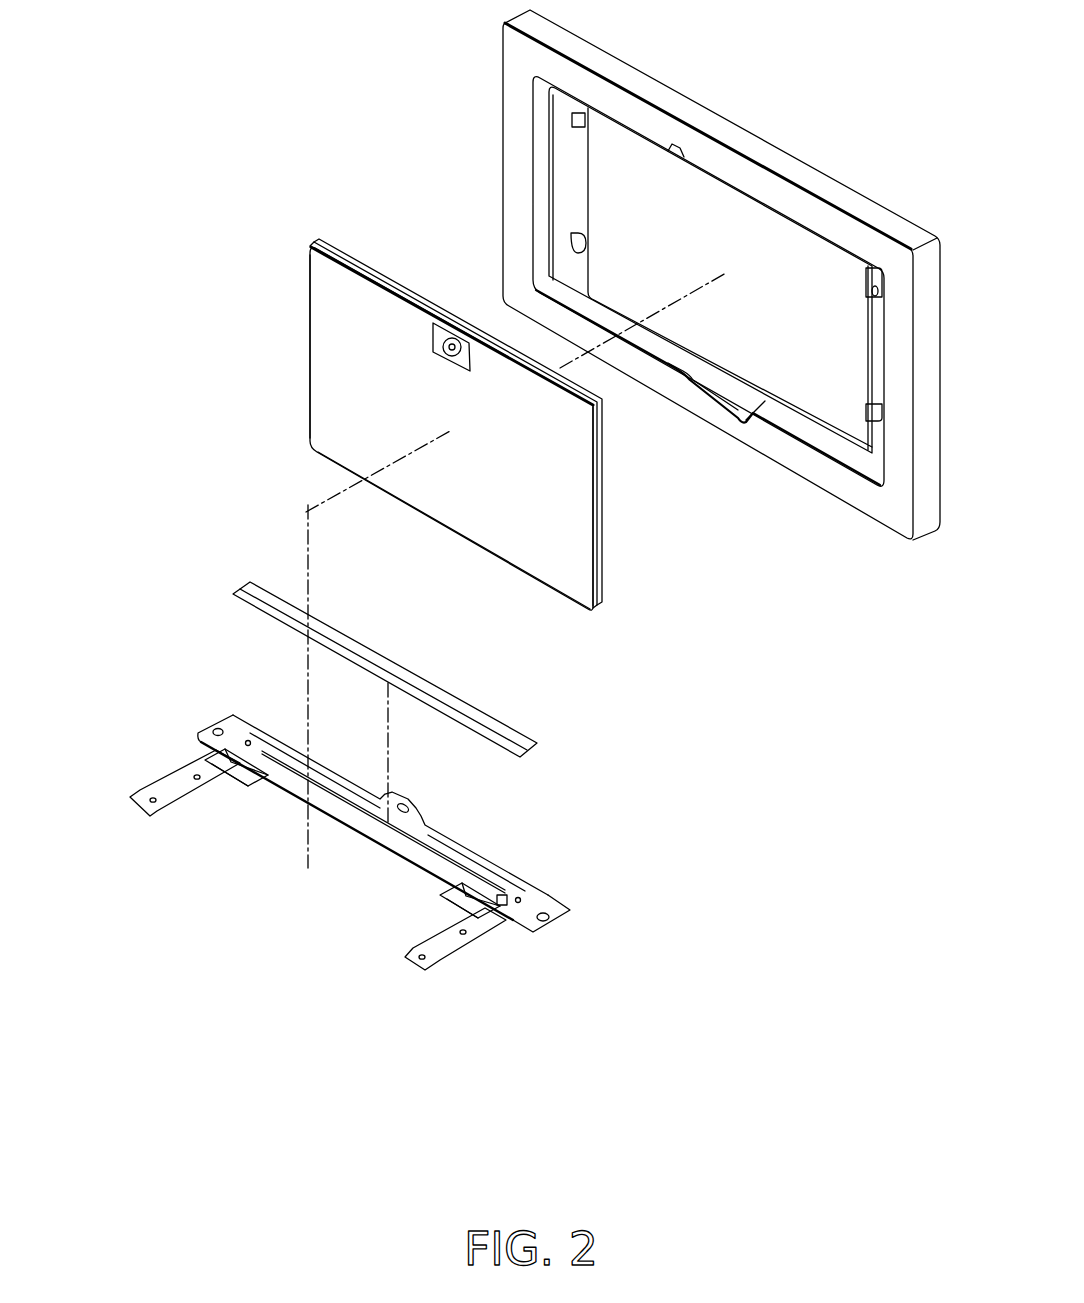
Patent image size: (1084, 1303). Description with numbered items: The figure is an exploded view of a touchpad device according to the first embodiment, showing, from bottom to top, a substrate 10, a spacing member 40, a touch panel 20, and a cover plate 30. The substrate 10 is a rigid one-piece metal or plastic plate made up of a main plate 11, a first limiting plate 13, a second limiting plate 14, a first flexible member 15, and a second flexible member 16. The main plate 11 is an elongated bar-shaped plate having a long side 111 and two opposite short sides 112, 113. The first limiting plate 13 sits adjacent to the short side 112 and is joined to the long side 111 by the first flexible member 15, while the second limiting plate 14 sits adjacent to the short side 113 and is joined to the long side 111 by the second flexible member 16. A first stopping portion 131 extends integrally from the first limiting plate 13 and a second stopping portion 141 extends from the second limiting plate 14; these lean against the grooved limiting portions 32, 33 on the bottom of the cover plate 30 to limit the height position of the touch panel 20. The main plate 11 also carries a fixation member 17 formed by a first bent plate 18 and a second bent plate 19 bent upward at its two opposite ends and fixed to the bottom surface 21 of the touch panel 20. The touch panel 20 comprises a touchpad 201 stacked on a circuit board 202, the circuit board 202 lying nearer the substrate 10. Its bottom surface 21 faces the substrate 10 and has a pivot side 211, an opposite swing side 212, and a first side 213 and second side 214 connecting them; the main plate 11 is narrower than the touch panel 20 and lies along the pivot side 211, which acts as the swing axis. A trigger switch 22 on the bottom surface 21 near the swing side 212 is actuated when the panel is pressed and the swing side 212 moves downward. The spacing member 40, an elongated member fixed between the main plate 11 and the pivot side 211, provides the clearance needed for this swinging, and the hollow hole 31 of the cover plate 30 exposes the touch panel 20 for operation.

The substrate 10 is at (350, 845).
The main plate 11 is at (398, 818).
The long side 111 is at (400, 862).
The short side 112 is at (212, 727).
The short side 113 is at (560, 925).
The first limiting plate 13 is at (147, 770).
The first stopping portion 131 is at (131, 792).
The second limiting plate 14 is at (463, 973).
The second stopping portion 141 is at (432, 972).
The first flexible member 15 is at (256, 803).
The second flexible member 16 is at (512, 935).
The fixation member 17 is at (400, 778).
The first bent plate 18 is at (250, 741).
The second bent plate 19 is at (500, 896).
The touch panel 20 is at (481, 431).
The touchpad 201 is at (604, 535).
The circuit board 202 is at (605, 563).
The bottom surface 21 is at (457, 431).
The pivot side 211 is at (436, 518).
The swing side 212 is at (386, 305).
The first side 213 is at (306, 350).
The second side 214 is at (590, 477).
The trigger switch 22 is at (455, 328).
The cover plate 30 is at (721, 271).
The hollow hole 31 is at (590, 173).
The limiting portion 32 is at (578, 112).
The limiting portion 33 is at (884, 270).
The spacing member 40 is at (480, 704).